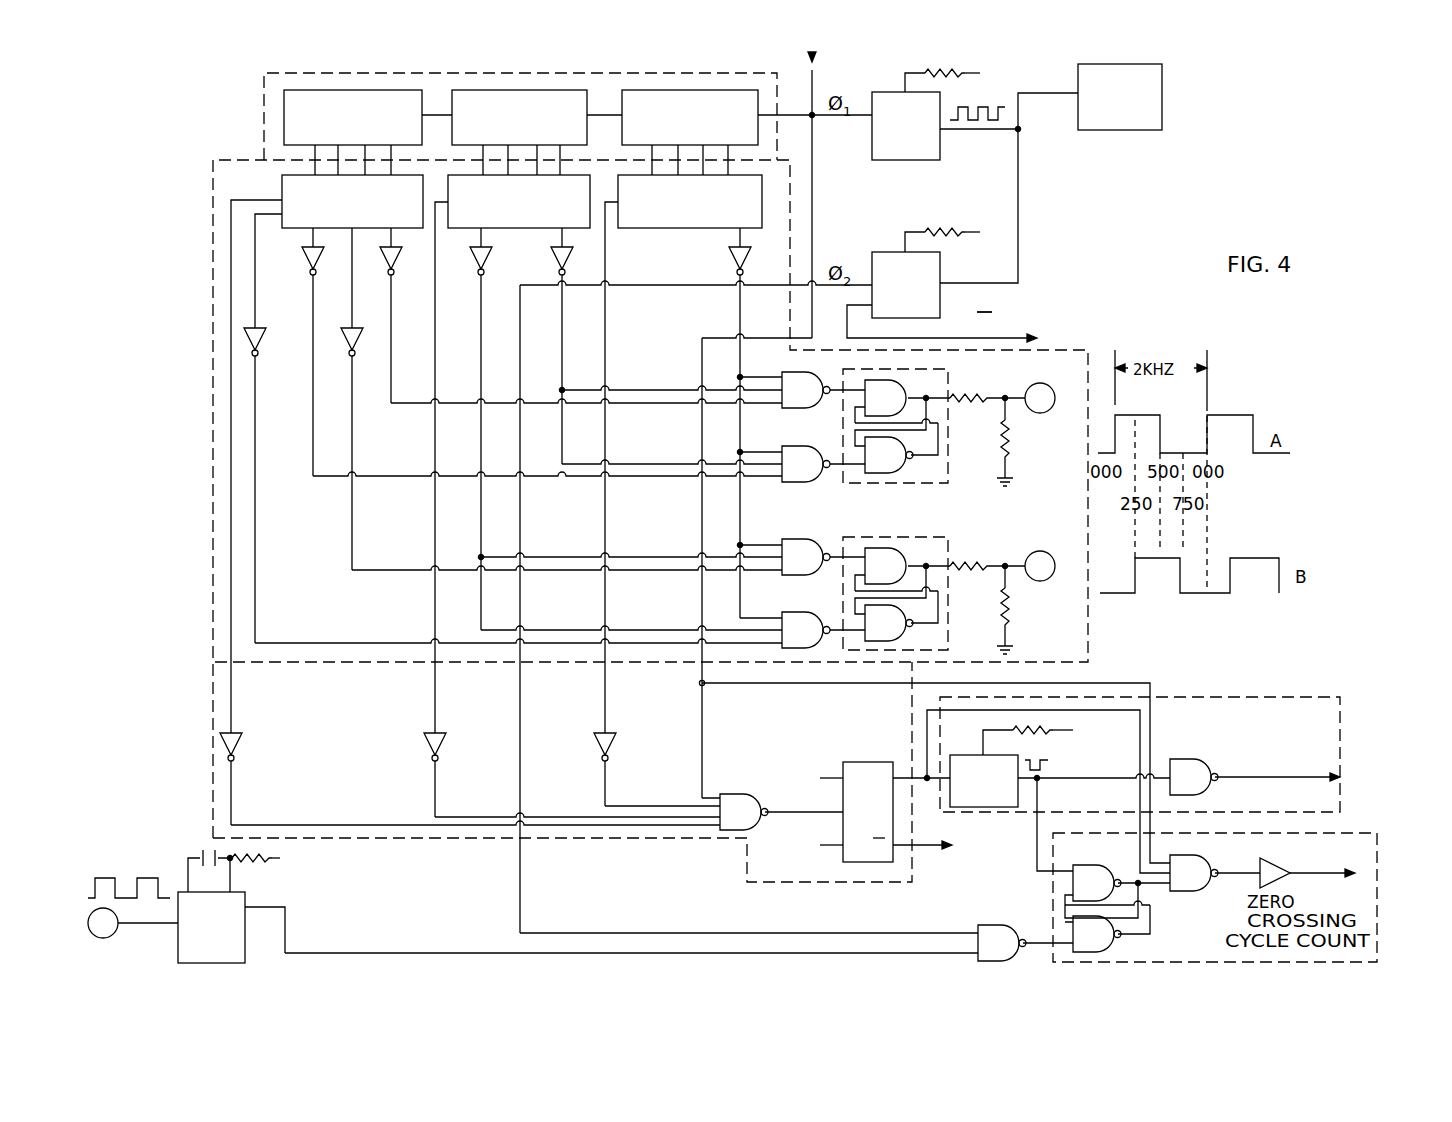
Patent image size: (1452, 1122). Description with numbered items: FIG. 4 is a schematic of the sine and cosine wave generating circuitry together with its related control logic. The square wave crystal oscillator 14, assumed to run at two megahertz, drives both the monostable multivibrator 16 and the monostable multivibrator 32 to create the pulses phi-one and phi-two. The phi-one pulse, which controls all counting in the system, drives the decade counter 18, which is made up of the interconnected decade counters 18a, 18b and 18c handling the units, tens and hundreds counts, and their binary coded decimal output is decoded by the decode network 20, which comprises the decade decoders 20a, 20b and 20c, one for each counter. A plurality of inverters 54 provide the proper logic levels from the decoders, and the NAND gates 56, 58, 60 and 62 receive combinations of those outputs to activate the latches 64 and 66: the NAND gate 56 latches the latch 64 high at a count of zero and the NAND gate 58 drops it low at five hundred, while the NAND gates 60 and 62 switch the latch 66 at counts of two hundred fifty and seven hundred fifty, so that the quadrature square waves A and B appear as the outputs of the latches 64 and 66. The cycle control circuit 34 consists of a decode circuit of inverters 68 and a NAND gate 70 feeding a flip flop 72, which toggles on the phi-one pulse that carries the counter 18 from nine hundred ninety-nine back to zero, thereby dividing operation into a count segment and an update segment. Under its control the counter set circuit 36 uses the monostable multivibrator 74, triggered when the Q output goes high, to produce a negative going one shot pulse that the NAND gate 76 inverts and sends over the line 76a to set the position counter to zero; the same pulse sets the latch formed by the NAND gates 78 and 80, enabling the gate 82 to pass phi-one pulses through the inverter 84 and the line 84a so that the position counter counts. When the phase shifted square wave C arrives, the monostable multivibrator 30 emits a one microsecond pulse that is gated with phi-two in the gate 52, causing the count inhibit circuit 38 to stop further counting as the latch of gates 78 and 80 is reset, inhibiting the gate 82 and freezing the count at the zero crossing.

The square wave crystal oscillator 14 is at (1162, 92).
The monostable multivibrator 16 is at (940, 152).
The decade counter 18 is at (260, 106).
The decade counter 18a is at (688, 90).
The decade counter 18b is at (530, 90).
The decade counter 18c is at (390, 90).
The decode network 20 is at (213, 258).
The decade decoder 20a is at (630, 229).
The decade decoder 20b is at (492, 229).
The decade decoder 20c is at (286, 229).
The monostable multivibrator 30 is at (178, 944).
The monostable multivibrator 32 is at (886, 252).
The cycle control circuit 34 is at (213, 720).
The counter set circuit 36 is at (1254, 697).
The count inhibit circuit 38 is at (1345, 833).
The gate 52 is at (980, 930).
The inverters 54 is at (318, 263).
The NAND gate 56 is at (784, 375).
The NAND gate 58 is at (784, 449).
The NAND gate 60 is at (786, 541).
The NAND gate 62 is at (786, 614).
The latch 64 is at (946, 468).
The latch 66 is at (948, 590).
The inverters 68 is at (240, 745).
The NAND gate 70 is at (752, 792).
The flip flop 72 is at (858, 762).
The monostable multivibrator 74 is at (966, 755).
The NAND gate 76 is at (1180, 759).
The line 76a is at (1300, 778).
The NAND gate 78 is at (1079, 866).
The NAND gate 80 is at (1118, 948).
The gate 82 is at (1213, 866).
The inverter 84 is at (1282, 864).
The line 84a is at (1320, 872).